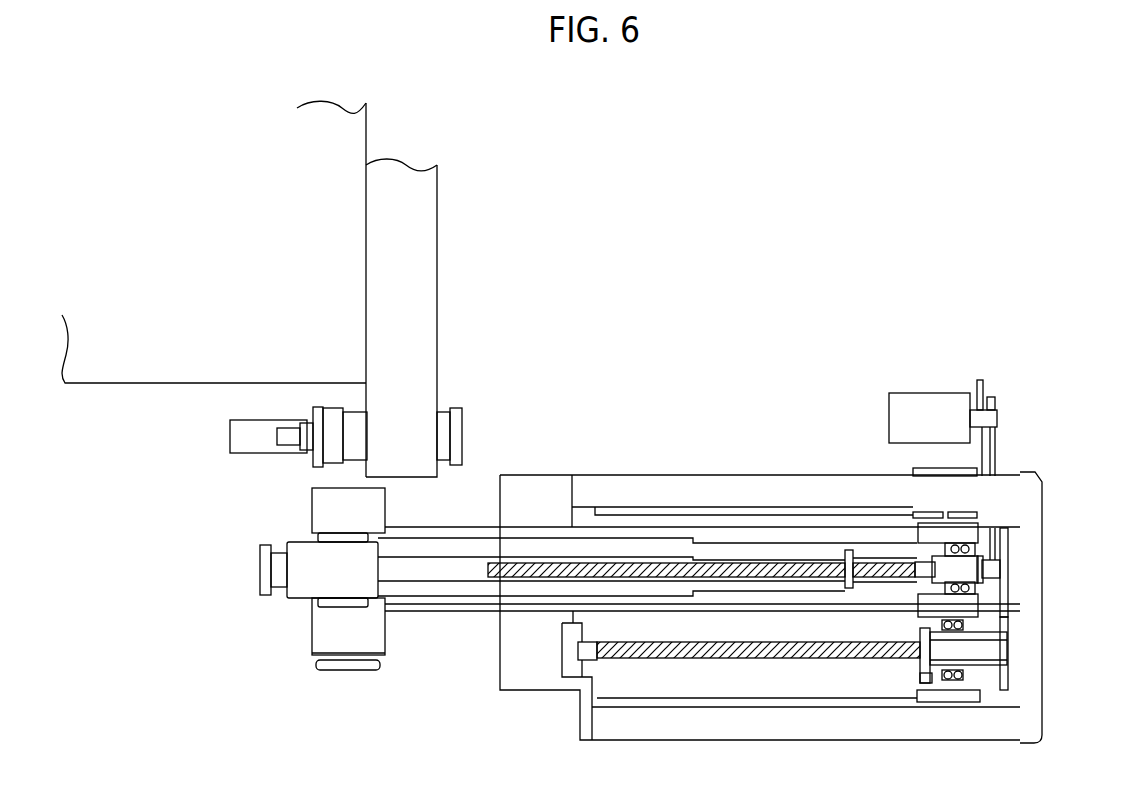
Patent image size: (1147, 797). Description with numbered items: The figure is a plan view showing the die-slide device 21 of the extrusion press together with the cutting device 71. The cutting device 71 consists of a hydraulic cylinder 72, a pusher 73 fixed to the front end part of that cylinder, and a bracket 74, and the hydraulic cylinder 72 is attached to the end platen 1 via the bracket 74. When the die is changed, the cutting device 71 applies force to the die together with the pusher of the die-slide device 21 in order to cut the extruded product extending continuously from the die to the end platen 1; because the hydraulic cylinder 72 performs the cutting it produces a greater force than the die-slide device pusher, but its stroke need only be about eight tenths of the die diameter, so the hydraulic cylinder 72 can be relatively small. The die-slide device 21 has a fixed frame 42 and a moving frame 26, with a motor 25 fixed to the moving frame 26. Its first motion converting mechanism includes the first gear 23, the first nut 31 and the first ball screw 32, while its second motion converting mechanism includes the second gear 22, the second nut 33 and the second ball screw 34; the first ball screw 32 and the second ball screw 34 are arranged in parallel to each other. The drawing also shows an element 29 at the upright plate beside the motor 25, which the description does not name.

The end platen 1 is at (352, 139).
The bracket 74 is at (420, 272).
The pusher 73 is at (243, 435).
The cutting device 71 is at (450, 403).
The hydraulic cylinder 72 is at (465, 437).
The fixed frame 42 is at (615, 495).
The second ball screw 34 is at (680, 568).
The second nut 33 is at (880, 560).
The motor 25 is at (925, 410).
The bracket plate 29 is at (995, 457).
The die-slide device 21 is at (1040, 468).
The moving frame 26 is at (955, 535).
The second gear 22 is at (1005, 542).
The first gear 23 is at (1005, 617).
The first ball screw 32 is at (728, 650).
The first nut 31 is at (937, 670).